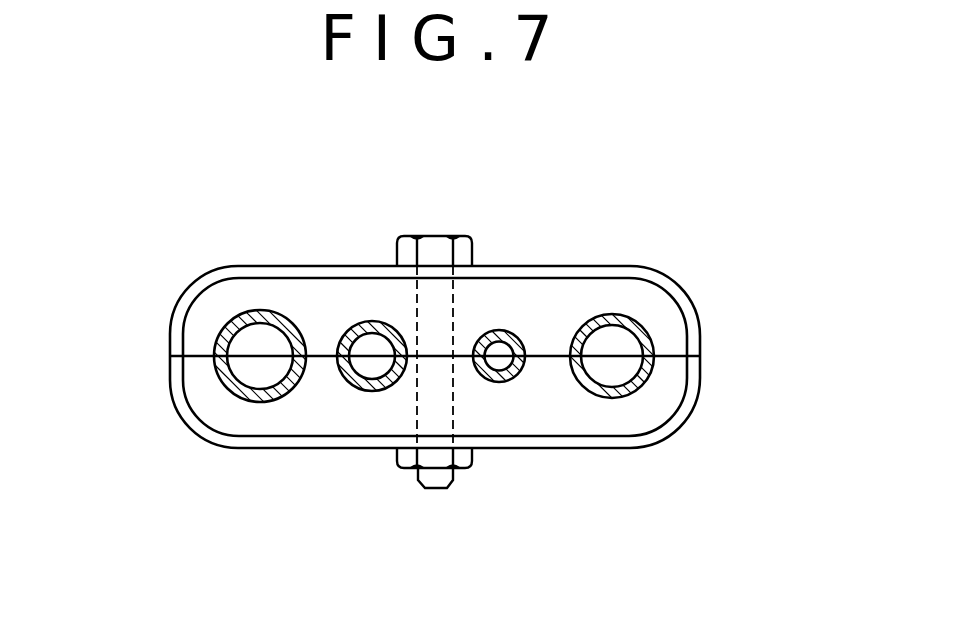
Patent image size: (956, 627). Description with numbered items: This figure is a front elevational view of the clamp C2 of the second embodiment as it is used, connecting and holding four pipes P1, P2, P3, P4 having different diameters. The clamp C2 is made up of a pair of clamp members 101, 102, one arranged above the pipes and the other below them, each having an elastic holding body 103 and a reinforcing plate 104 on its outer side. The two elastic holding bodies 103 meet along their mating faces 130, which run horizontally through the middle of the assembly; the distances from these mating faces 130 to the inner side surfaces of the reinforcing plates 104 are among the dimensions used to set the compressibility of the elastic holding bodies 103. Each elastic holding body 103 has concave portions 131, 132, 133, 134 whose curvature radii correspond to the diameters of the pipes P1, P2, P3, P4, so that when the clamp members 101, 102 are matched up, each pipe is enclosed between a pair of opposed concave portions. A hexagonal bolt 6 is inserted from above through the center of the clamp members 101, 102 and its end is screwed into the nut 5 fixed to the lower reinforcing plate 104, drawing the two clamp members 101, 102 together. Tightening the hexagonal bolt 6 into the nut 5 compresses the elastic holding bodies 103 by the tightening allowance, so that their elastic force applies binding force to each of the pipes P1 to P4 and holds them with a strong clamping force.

The nut 5 is at (467, 460).
The hexagonal bolt 6 is at (433, 248).
The clamp member 101 is at (170, 322).
The clamp member 102 is at (160, 372).
The elastic holding body 103 is at (237, 300).
The reinforcing plate 104 is at (558, 268).
The mating face 130 is at (425, 337).
The concave portion 131 is at (262, 312).
The concave portion 132 is at (620, 316).
The concave portion 133 is at (357, 320).
The concave portion 134 is at (495, 330).
The pipe P1 is at (223, 328).
The pipe P2 is at (640, 327).
The pipe P3 is at (350, 387).
The pipe P4 is at (508, 378).
The clamp C2 is at (688, 265).